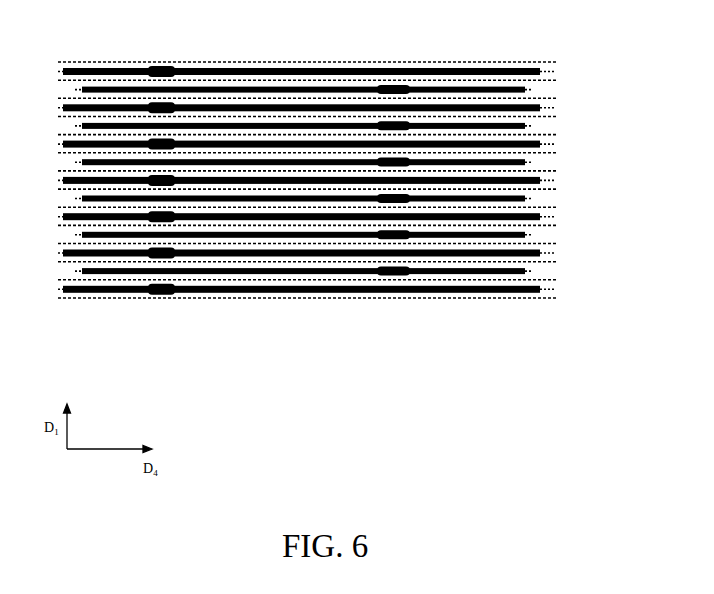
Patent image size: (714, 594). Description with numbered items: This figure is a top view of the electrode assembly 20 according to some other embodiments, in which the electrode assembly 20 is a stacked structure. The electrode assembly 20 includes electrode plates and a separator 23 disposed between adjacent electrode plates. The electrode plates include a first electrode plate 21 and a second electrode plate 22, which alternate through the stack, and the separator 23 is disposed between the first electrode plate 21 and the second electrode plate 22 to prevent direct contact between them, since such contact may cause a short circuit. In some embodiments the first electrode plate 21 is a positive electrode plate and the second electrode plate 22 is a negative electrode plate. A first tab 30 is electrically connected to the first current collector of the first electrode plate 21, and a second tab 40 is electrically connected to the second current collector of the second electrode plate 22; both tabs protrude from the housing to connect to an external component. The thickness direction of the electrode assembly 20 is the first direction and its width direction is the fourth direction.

The electrode assembly 20 is at (328, 181).
The first electrode plate 21 is at (530, 65).
The second electrode plate 22 is at (523, 93).
The separator 23 is at (465, 63).
The first tab 30 is at (162, 262).
The second tab 40 is at (400, 278).